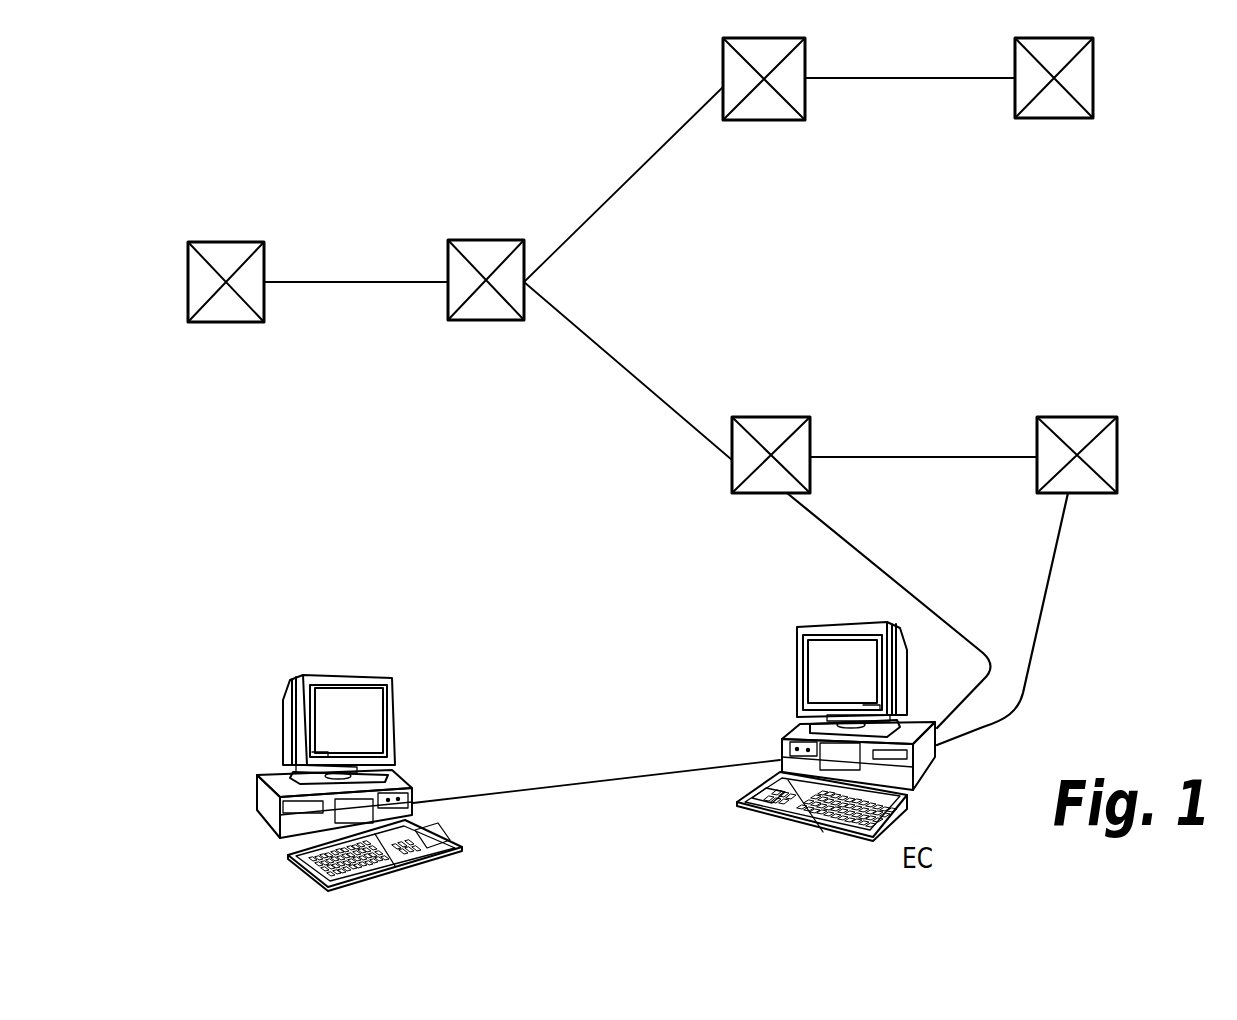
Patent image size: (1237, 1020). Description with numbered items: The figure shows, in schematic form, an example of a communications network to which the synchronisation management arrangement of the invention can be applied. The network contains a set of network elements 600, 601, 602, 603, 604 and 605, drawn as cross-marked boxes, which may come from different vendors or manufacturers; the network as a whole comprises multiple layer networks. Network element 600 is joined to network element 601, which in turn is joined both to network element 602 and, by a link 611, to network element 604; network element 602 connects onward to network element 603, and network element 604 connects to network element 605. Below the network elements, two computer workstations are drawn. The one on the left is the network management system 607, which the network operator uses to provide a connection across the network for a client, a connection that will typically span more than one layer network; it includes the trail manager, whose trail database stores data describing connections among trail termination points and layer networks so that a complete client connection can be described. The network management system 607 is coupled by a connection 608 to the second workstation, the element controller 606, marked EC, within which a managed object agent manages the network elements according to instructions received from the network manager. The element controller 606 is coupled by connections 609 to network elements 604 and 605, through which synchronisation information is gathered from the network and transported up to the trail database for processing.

The network element 600 is at (240, 322).
The network element 601 is at (490, 318).
The network element 602 is at (773, 119).
The network element 603 is at (1067, 116).
The network element 604 is at (775, 418).
The network element 605 is at (1077, 418).
The computer (EC) 606 is at (813, 627).
The network management system 607 is at (350, 678).
The connection link 608 is at (582, 783).
The connection link 609 is at (912, 587).
The network link 611 is at (653, 395).